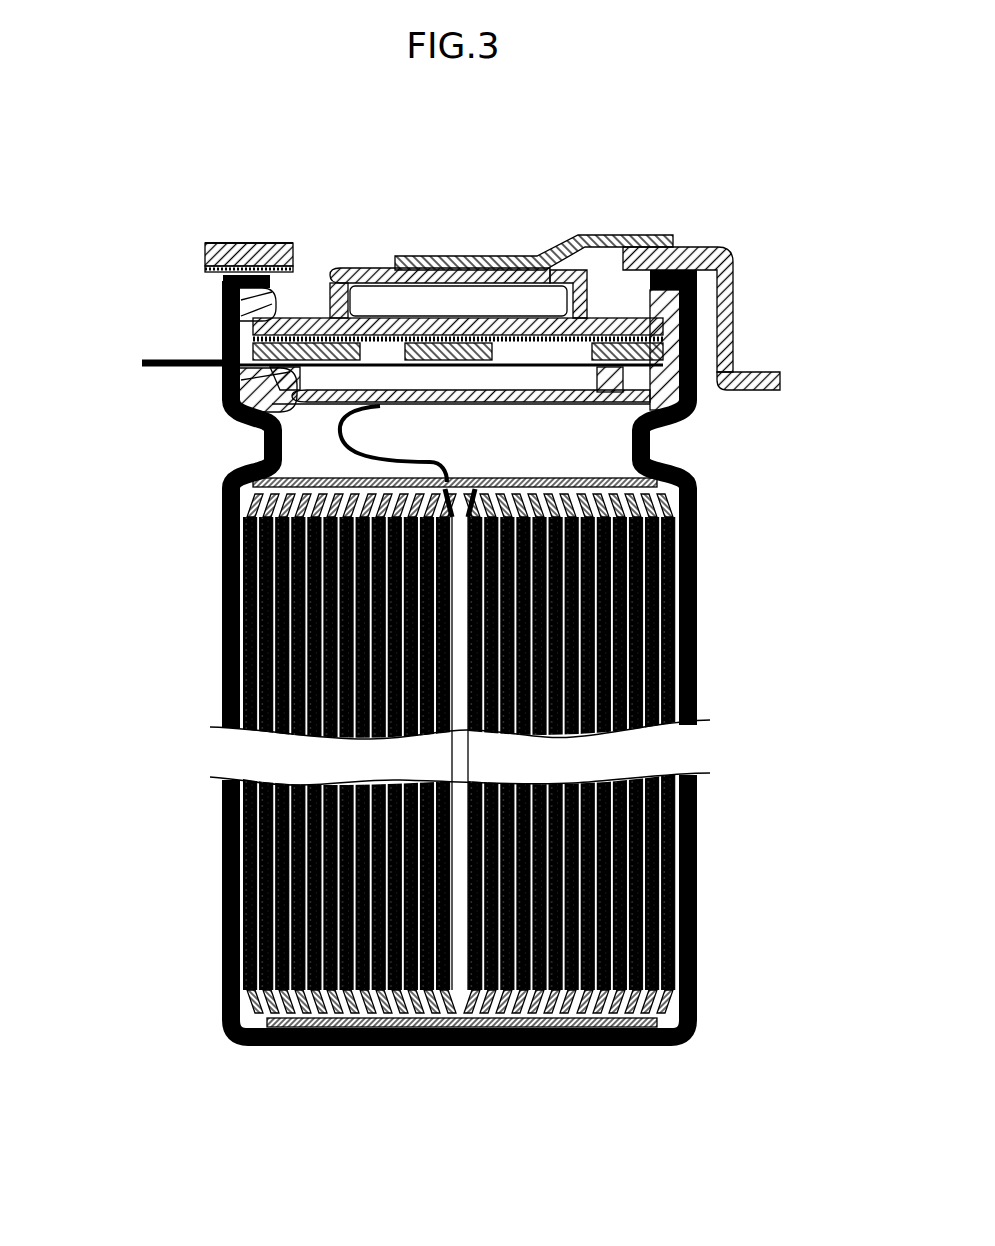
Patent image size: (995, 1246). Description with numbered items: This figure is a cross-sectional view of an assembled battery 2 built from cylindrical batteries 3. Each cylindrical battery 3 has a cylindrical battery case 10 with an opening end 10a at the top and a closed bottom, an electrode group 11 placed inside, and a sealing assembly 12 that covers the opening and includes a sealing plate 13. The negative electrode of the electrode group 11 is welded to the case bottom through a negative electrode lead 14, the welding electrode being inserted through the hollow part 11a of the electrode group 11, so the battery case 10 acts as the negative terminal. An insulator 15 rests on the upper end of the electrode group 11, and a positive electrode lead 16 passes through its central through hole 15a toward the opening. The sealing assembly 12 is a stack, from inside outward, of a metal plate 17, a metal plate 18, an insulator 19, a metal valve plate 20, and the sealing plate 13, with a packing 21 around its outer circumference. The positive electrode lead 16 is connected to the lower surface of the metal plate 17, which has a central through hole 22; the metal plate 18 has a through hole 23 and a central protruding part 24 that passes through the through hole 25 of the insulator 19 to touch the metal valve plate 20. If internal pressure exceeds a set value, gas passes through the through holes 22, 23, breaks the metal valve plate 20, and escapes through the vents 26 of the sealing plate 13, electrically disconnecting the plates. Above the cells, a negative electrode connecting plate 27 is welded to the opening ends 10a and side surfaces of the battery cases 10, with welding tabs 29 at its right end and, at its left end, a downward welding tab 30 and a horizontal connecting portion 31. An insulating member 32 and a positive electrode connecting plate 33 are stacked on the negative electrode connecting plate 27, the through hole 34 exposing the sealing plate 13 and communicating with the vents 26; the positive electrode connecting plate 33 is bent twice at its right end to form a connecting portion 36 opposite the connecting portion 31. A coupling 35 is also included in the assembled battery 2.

The assembled battery 2 is at (190, 781).
The cylindrical battery 3 is at (225, 1010).
The battery case 10 is at (693, 560).
The opening end 10a is at (663, 233).
The electrode group 11 is at (670, 853).
The hollow part 11a is at (455, 710).
The sealing assembly 12 is at (697, 323).
The sealing plate 13 is at (386, 268).
The negative electrode lead 14 is at (667, 1013).
The insulator 15 is at (580, 477).
The through hole 15a is at (470, 477).
The positive electrode lead 16 is at (388, 450).
The metal plate 17 is at (223, 412).
The metal plate 18 is at (223, 370).
The insulator 19 is at (220, 338).
The metal valve plate 20 is at (218, 312).
The packing 21 is at (237, 243).
The through hole 22 is at (493, 398).
The through hole 23 is at (378, 362).
The protruding part 24 is at (455, 358).
The through hole 25 is at (328, 268).
The vent 26 is at (351, 268).
The negative electrode connecting plate 27 is at (220, 282).
The welding tab 29 is at (697, 340).
The welding tab 30 is at (220, 318).
The connecting portion 31 is at (160, 358).
The insulating member 32 is at (733, 272).
The positive electrode connecting plate 33 is at (267, 243).
The through hole 34 is at (305, 262).
The coupling 35 is at (563, 237).
The connecting portion 36 is at (777, 378).